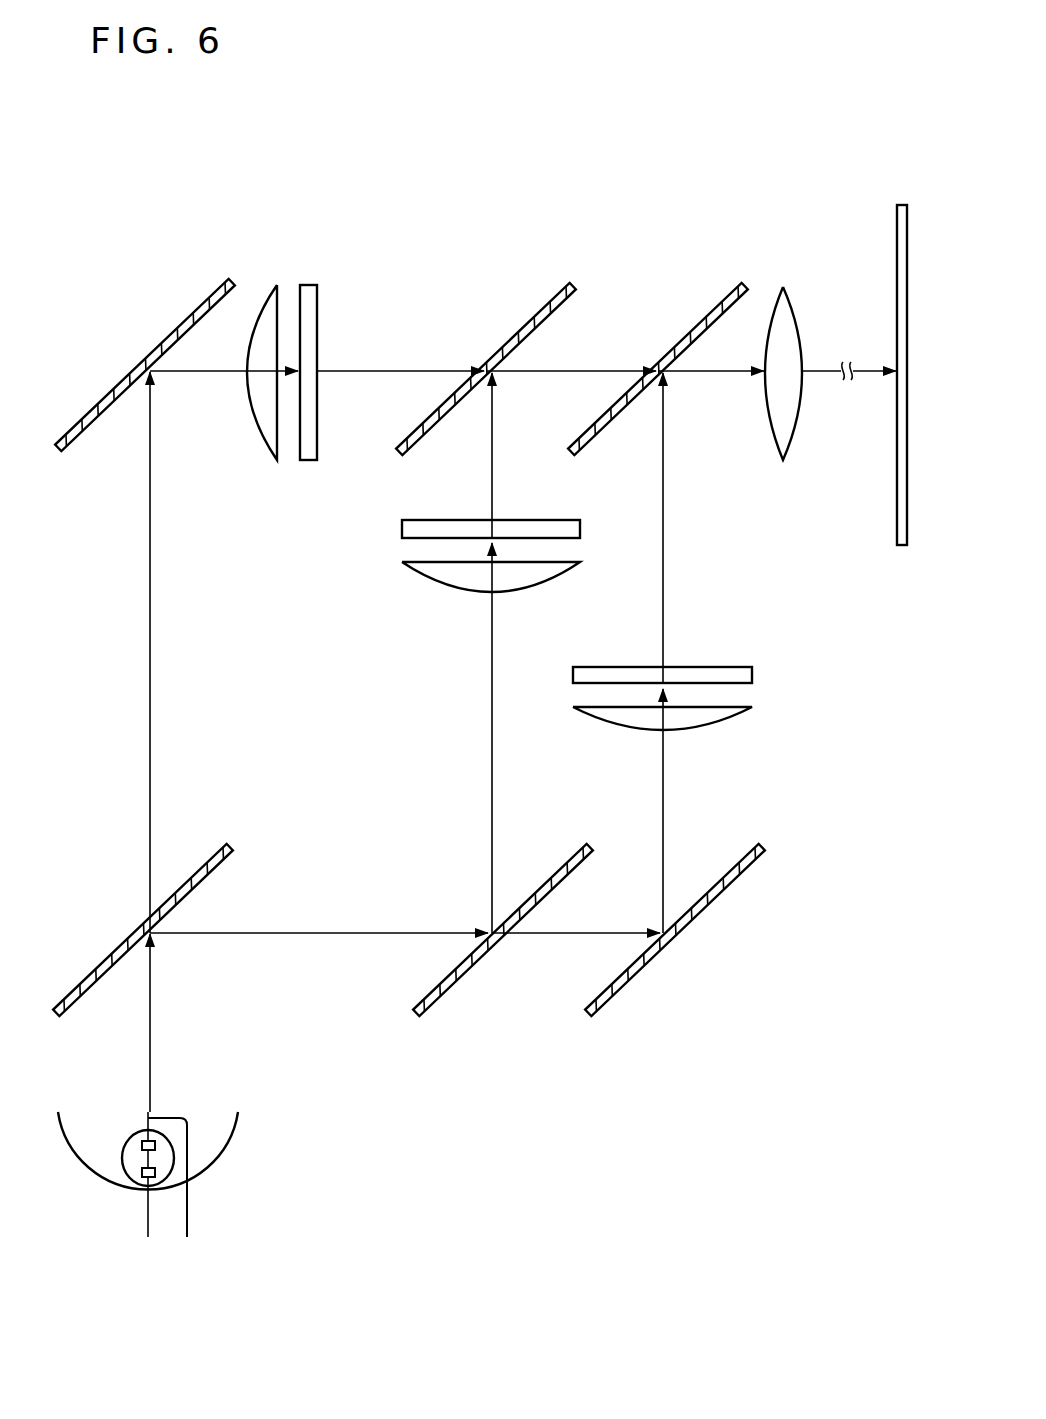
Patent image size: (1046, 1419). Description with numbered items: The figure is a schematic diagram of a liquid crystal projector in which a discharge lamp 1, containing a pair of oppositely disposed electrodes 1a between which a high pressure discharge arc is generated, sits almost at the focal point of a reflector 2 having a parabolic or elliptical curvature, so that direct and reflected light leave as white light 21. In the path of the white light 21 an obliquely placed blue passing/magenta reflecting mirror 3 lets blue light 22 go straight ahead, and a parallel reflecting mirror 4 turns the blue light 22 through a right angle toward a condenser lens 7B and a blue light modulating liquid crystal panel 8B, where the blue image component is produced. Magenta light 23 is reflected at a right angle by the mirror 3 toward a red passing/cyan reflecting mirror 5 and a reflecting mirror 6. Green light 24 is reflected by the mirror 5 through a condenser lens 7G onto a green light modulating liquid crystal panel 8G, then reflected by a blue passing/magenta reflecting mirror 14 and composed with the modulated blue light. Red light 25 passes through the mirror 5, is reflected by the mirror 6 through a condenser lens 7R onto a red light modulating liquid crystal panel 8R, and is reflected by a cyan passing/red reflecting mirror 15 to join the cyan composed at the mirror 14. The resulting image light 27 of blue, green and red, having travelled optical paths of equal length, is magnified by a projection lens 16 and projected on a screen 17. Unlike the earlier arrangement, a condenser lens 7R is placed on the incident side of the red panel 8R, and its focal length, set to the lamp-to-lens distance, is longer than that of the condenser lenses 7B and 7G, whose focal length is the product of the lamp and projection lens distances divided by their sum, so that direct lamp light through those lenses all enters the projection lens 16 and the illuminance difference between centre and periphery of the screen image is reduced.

The discharge lamp 1 is at (110, 1141).
The electrodes 1a is at (142, 1146).
The reflector 2 is at (234, 1143).
The blue passing/magenta reflecting mirror 3 is at (97, 966).
The reflecting mirror 4 is at (191, 311).
The red passing/cyan reflecting mirror 5 is at (463, 977).
The reflecting mirror 6 is at (641, 975).
The condenser lens 7B is at (250, 420).
The condenser lens 7G is at (432, 576).
The condenser lens 7R is at (612, 722).
The blue light modulating liquid crystal panel 8B is at (308, 283).
The green light modulating liquid crystal panel 8G is at (401, 528).
The red light modulating liquid crystal panel 8R is at (705, 665).
The blue passing/magenta reflecting mirror 14 is at (528, 318).
The cyan passing/red reflecting mirror 15 is at (700, 318).
The projection lens 16 is at (790, 305).
The screen 17 is at (894, 500).
The white light 21 is at (151, 1020).
The blue light 22 is at (150, 622).
The magenta light 23 is at (345, 931).
The green light 24 is at (490, 772).
The red light 25 is at (553, 937).
The image light 27 is at (708, 376).